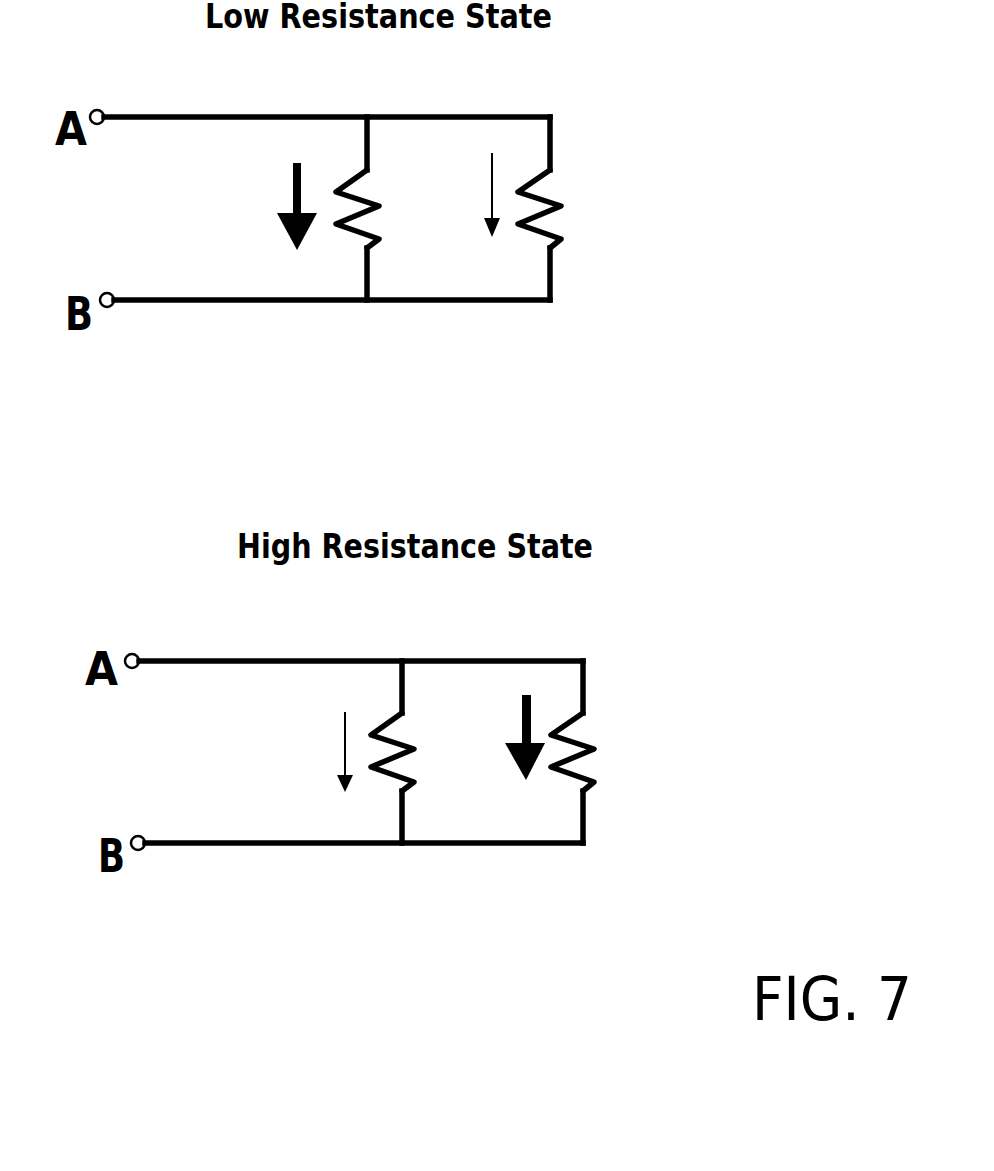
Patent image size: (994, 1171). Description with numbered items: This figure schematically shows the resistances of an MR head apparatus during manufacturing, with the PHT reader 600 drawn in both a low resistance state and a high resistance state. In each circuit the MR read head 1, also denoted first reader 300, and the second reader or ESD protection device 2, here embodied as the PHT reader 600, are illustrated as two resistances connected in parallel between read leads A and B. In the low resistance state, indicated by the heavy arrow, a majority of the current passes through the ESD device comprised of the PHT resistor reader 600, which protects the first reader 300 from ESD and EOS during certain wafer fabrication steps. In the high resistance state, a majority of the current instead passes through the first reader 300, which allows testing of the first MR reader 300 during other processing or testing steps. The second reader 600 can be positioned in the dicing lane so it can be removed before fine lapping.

The MR read head 1 is at (575, 480).
The second reader or ESD protection device 2 is at (395, 485).
The first reader 300 is at (558, 186).
The PHT reader 600 is at (333, 249).